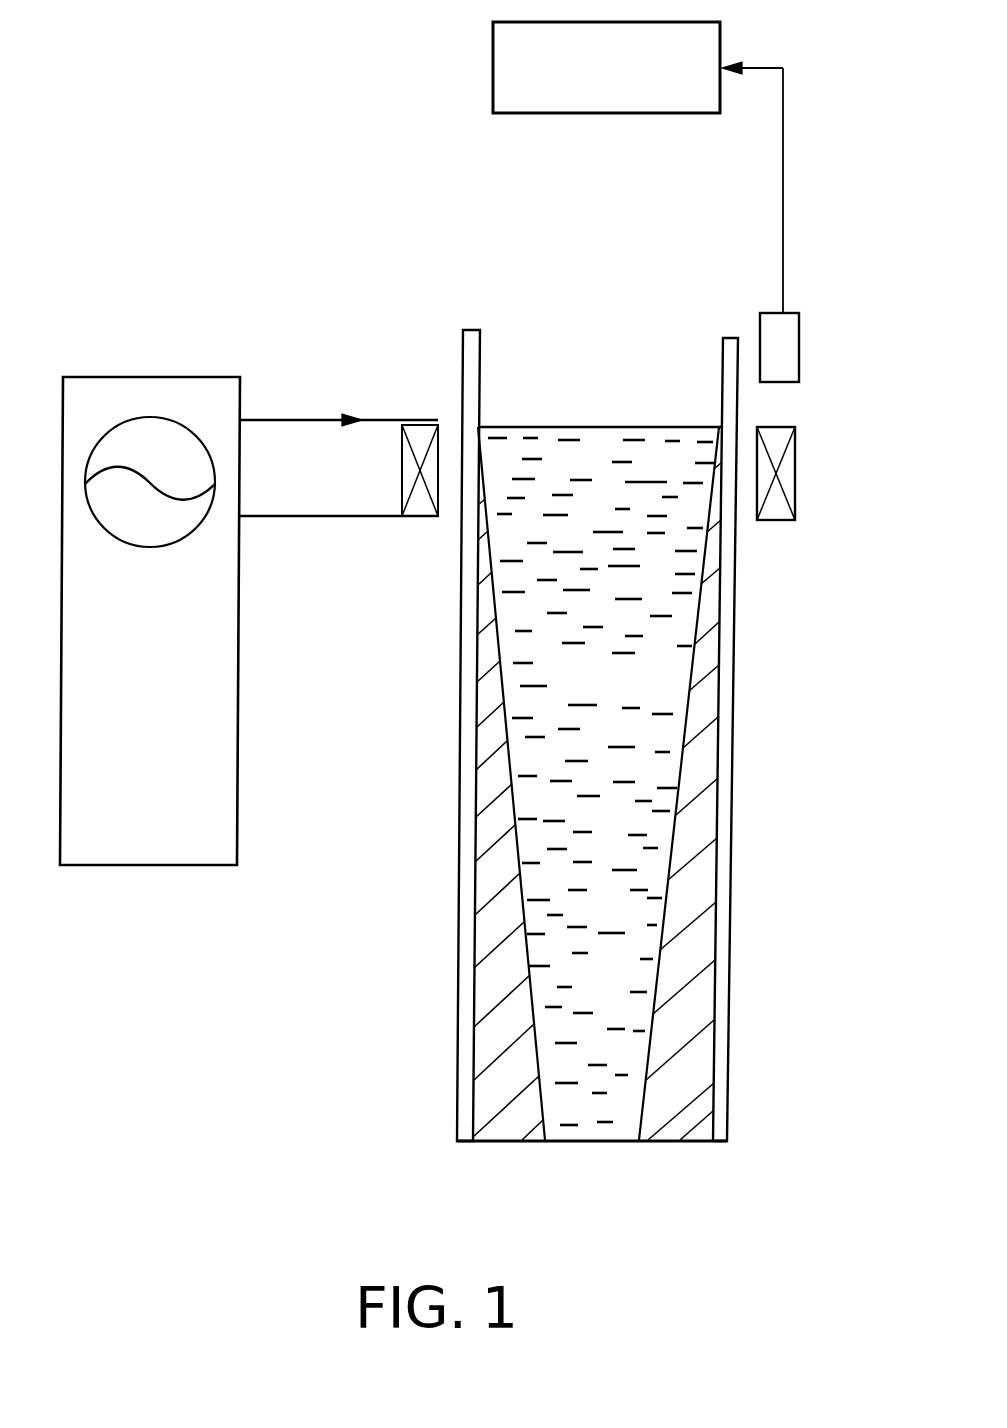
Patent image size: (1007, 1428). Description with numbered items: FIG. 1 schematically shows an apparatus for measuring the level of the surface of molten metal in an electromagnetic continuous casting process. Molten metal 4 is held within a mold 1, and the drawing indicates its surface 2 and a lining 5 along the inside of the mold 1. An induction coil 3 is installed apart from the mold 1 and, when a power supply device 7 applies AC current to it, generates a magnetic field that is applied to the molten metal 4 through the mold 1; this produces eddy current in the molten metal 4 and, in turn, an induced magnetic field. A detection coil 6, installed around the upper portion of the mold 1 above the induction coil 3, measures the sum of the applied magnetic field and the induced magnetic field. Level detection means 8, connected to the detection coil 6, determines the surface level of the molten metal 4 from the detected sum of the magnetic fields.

The mold 1 is at (720, 982).
The liquid surface level 2 is at (600, 427).
The induction coil 3 is at (795, 480).
The molten metal 4 is at (675, 660).
The liner 5 is at (707, 867).
The detection coil 6 is at (799, 340).
The power supply device 7 is at (150, 865).
The level detection means 8 is at (600, 113).